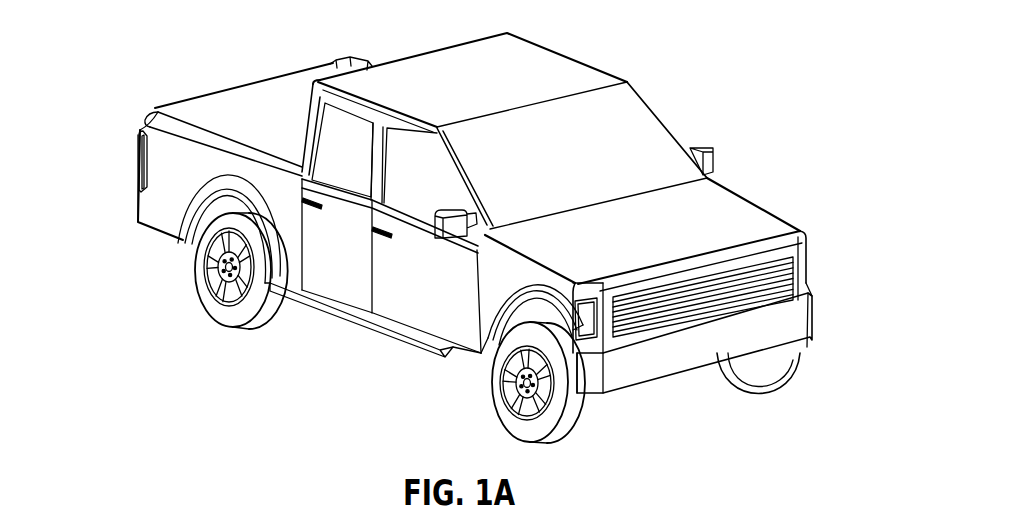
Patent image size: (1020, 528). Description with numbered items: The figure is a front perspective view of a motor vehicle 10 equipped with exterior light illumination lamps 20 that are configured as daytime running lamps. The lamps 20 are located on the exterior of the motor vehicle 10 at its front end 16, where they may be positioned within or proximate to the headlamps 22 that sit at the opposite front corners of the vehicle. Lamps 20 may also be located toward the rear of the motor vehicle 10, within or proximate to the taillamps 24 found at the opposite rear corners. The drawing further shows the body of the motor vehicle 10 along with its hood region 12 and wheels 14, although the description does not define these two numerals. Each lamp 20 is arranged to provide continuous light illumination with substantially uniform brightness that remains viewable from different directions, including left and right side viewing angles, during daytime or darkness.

The motor vehicle 10 is at (732, 72).
The hood 12 is at (735, 190).
The wheel 14 is at (217, 306).
The front end 16 is at (718, 353).
The light illumination lamp 20 is at (140, 172).
The headlamp 22 is at (803, 265).
The taillamp 24 is at (137, 157).